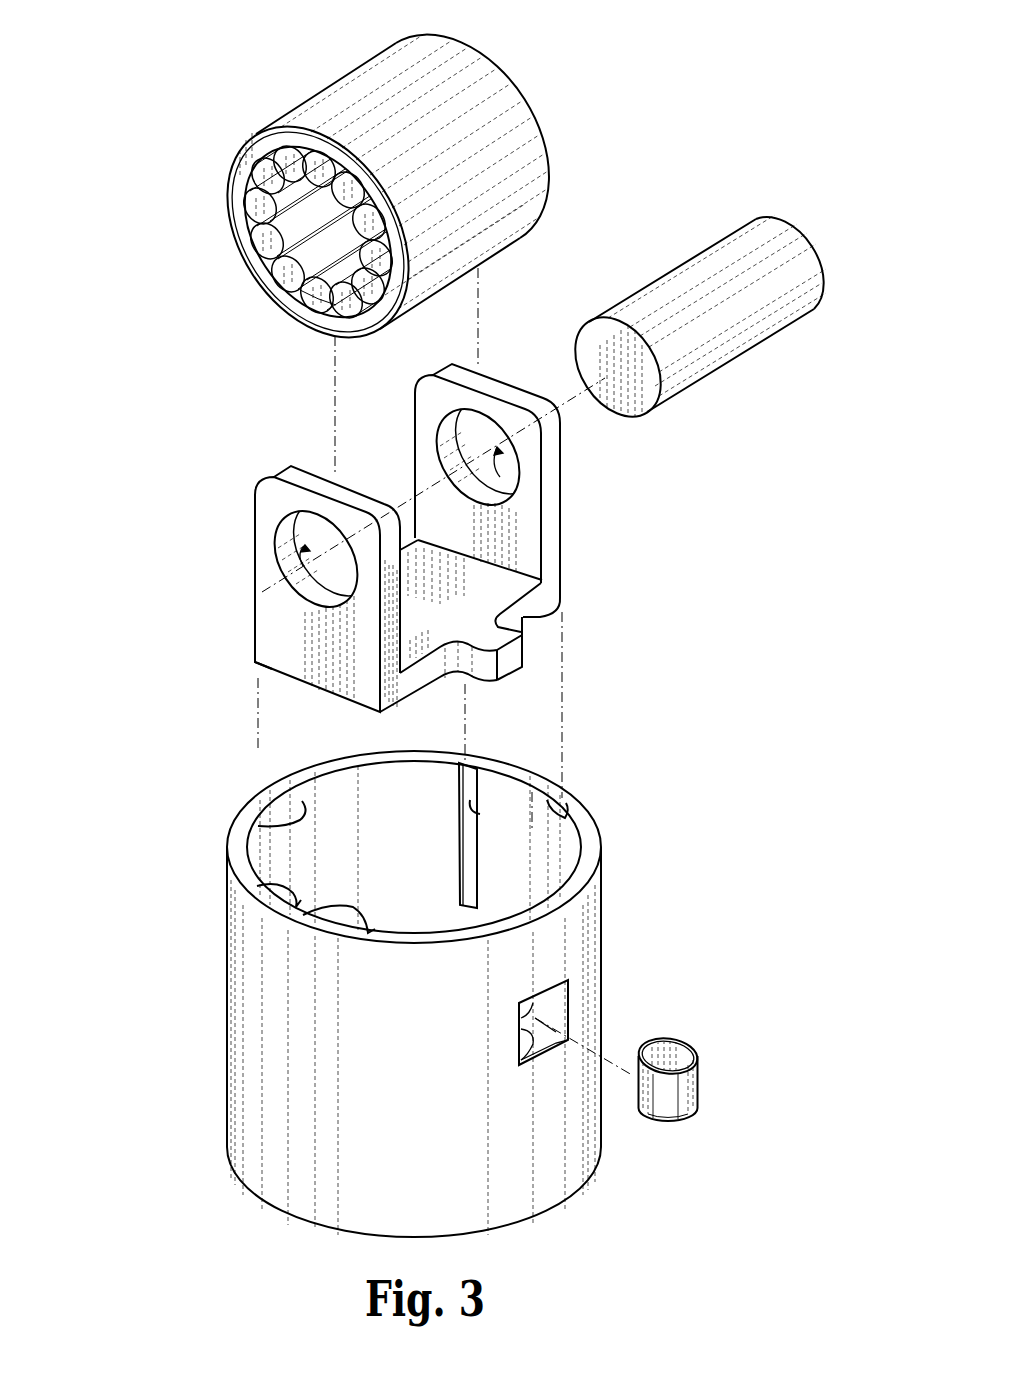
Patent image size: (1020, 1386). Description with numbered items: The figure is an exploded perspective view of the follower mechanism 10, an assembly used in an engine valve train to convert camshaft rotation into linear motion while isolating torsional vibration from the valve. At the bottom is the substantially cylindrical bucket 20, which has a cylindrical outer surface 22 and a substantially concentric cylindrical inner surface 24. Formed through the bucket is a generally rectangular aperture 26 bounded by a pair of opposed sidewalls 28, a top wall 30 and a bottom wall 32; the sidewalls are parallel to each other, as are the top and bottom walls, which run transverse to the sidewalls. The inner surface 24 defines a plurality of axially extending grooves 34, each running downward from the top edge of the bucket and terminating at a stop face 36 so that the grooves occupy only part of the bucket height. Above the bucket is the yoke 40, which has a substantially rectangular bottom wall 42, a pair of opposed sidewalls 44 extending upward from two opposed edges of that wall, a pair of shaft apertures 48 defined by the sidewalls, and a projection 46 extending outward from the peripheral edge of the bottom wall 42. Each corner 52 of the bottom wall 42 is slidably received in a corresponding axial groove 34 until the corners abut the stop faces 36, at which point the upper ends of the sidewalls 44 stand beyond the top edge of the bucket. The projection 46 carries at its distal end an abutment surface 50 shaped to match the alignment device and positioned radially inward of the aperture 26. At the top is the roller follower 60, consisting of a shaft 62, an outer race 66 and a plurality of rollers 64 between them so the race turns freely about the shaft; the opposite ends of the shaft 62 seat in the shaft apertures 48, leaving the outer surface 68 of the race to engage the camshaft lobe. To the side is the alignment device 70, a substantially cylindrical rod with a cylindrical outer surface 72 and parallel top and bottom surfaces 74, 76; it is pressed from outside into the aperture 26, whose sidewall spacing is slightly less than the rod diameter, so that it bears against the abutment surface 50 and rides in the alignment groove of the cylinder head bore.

The follower mechanism 10 is at (128, 408).
The bucket 20 is at (405, 1079).
The cylindrical outer surface 22 is at (275, 1047).
The cylindrical inner surface 24 is at (258, 826).
The aperture 26 is at (545, 1010).
The opposed sidewalls 28 is at (557, 1043).
The top wall 30 is at (517, 1018).
The bottom wall 32 is at (556, 1052).
The axially extending grooves 34 is at (470, 806).
The stop face 36 is at (458, 868).
The yoke 40 is at (613, 557).
The bottom wall 42 is at (318, 690).
The opposed sidewalls 44 is at (280, 620).
The projection 46 is at (500, 621).
The shaft apertures 48 is at (273, 559).
The abutment surface 50 is at (505, 653).
The corner 52 is at (253, 662).
The roller follower 60 is at (523, 103).
The shaft 62 is at (682, 267).
The rollers 64 is at (263, 233).
The outer race 66 is at (312, 285).
The outer surface 68 is at (482, 183).
The alignment device 70 is at (705, 1082).
The cylindrical outer surface 72 is at (651, 1090).
The top surface 74 is at (683, 1053).
The bottom surface 76 is at (676, 1121).